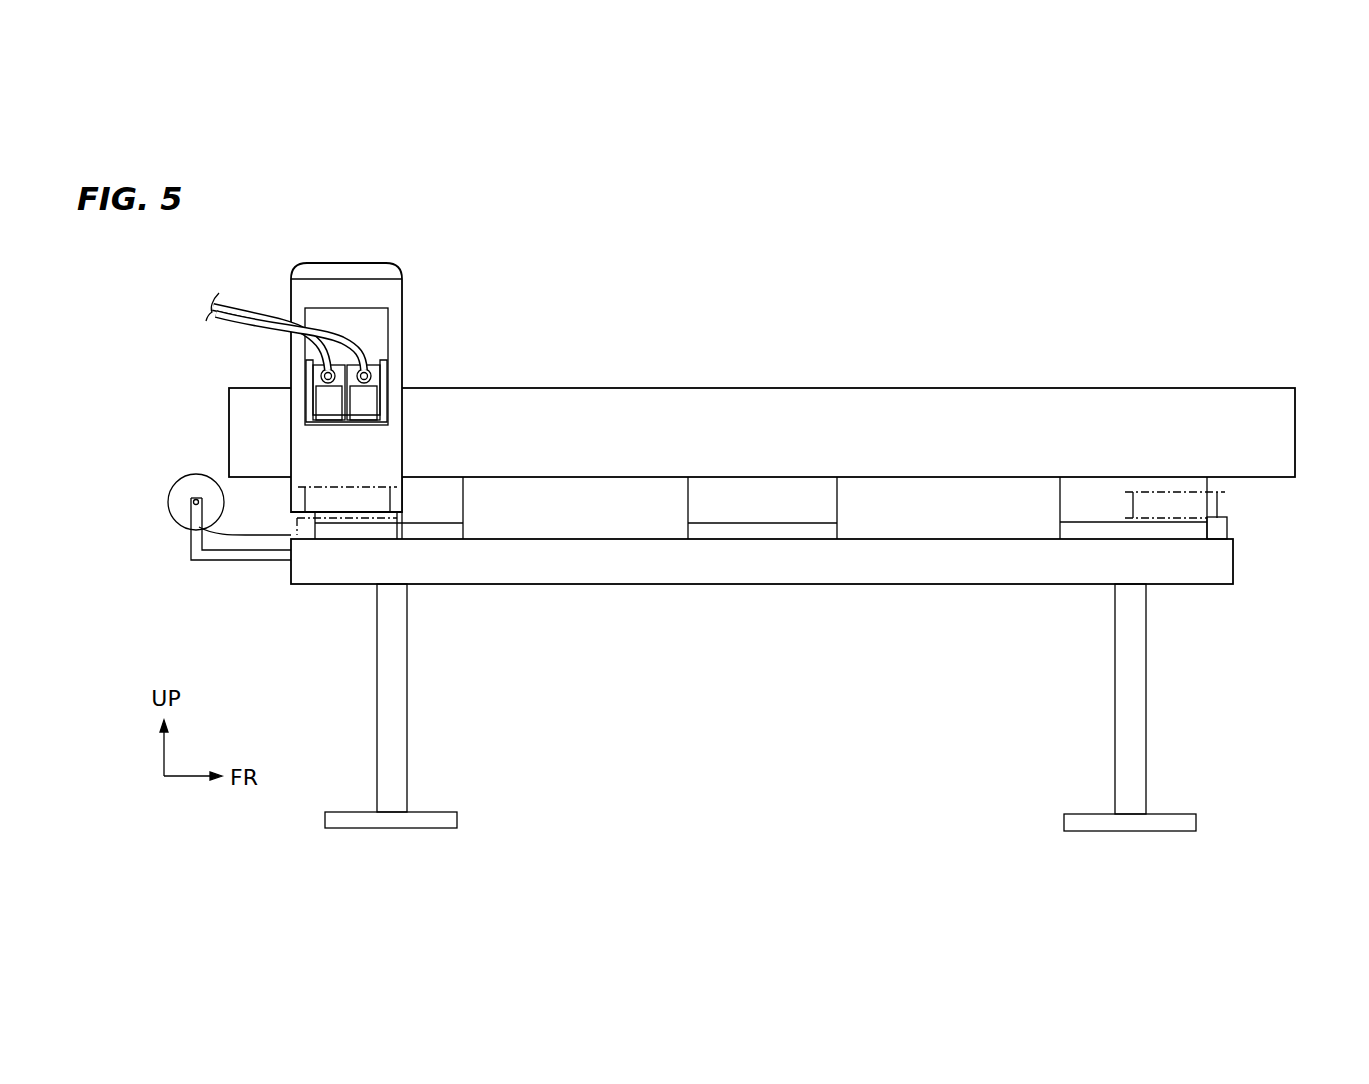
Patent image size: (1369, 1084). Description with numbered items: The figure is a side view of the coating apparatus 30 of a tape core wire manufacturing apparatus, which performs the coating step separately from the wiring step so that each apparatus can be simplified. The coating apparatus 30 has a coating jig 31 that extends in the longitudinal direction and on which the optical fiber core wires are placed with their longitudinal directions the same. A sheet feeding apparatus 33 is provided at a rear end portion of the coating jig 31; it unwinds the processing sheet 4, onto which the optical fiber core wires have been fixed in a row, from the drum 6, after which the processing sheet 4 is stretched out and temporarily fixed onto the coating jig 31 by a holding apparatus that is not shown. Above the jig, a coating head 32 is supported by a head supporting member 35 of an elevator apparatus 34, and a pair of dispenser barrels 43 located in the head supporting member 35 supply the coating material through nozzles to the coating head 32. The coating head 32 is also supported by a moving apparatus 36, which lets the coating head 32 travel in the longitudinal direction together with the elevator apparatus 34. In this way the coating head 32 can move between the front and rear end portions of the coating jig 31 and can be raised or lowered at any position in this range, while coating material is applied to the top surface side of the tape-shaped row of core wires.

The coating apparatus 30 is at (1090, 262).
The coating jig 31 is at (553, 585).
The coating head 32 is at (405, 512).
The sheet feeding apparatus 33 is at (174, 493).
The elevator apparatus 34 is at (410, 301).
The head supporting member 35 is at (388, 373).
The moving apparatus 36 is at (570, 380).
The processing sheet 4 is at (254, 532).
The drum 6 is at (177, 480).
The dispenser barrels 43 is at (345, 403).